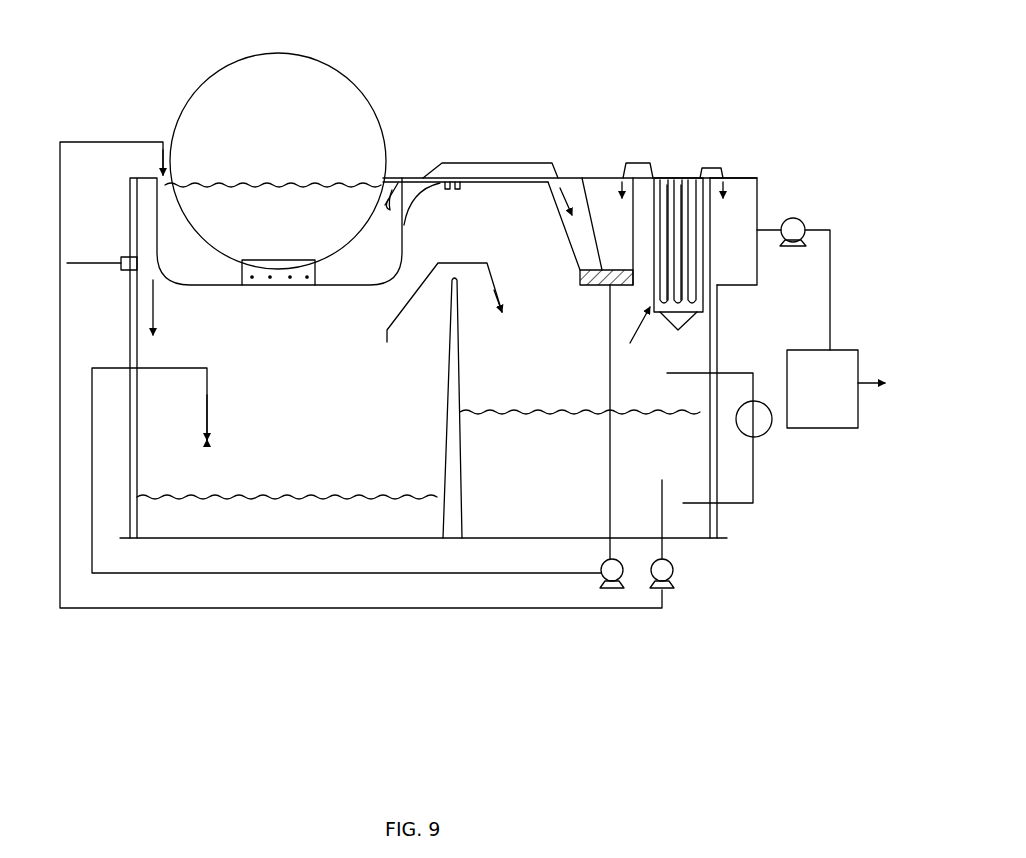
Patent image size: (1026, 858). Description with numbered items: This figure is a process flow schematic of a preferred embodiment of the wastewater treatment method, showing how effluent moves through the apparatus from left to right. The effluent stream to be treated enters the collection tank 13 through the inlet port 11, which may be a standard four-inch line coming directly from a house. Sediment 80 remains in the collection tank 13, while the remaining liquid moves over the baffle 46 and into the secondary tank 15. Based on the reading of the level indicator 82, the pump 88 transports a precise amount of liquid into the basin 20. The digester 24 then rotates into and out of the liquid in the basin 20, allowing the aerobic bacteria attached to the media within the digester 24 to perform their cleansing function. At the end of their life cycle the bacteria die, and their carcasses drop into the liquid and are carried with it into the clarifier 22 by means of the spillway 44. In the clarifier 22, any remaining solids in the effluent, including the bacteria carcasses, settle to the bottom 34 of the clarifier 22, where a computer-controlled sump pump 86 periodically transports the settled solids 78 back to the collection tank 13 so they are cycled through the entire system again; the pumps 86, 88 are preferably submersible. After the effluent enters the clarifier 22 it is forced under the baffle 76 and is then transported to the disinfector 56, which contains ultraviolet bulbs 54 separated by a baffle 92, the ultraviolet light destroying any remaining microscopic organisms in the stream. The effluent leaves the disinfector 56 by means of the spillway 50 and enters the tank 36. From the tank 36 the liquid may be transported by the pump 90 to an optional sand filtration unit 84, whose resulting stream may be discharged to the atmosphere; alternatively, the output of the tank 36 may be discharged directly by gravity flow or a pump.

The inlet port 11 is at (120, 270).
The collection tank 13 is at (162, 447).
The secondary tank 15 is at (688, 385).
The basin 20 is at (377, 222).
The clarifier 22 is at (607, 190).
The digester 24 is at (350, 60).
The bottom of the clarifier 34 is at (623, 285).
The tank 36 is at (757, 198).
The spillway 44 is at (487, 178).
The baffle 46 is at (460, 463).
The spillway 50 is at (707, 177).
The ultraviolet bulbs 54 is at (678, 327).
The disinfector 56 is at (648, 329).
The baffle 76 is at (580, 193).
The settled solids 78 is at (588, 282).
The sediment 80 is at (302, 510).
The level indicator 82 is at (763, 437).
The sand filtration unit 84 is at (822, 428).
The sump pump 86 is at (625, 580).
The pump 88 is at (675, 575).
The pump 90 is at (802, 218).
The baffle 92 is at (678, 178).